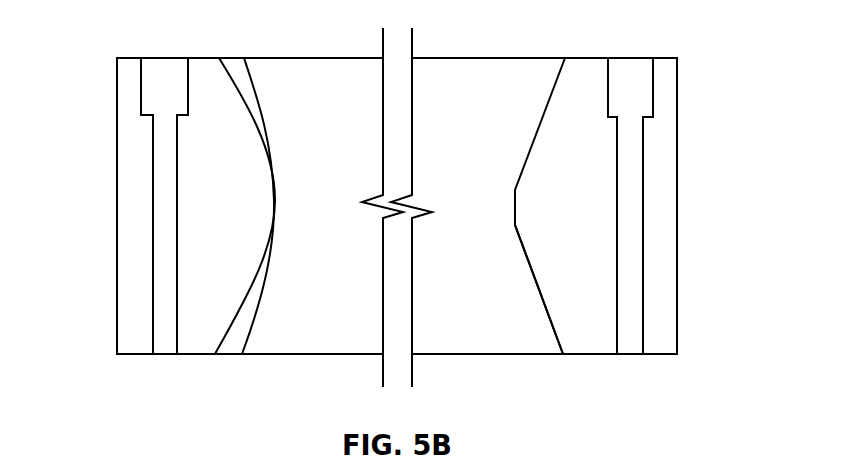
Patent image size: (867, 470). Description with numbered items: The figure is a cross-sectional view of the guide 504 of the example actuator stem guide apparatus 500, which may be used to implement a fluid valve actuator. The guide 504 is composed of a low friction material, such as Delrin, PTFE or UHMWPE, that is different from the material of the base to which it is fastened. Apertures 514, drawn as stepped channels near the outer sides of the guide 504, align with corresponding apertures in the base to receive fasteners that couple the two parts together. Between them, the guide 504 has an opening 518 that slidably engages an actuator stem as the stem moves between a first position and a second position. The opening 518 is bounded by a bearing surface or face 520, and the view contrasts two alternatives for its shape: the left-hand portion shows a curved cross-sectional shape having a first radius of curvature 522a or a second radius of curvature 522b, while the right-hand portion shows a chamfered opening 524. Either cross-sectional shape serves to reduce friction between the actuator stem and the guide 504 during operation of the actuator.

The actuator stem guide apparatus 500 is at (704, 52).
The guide 504 is at (677, 247).
The apertures 514 is at (165, 180).
The opening 518 is at (533, 58).
The bearing surface or face 520 is at (264, 92).
The first radius of curvature 522a is at (263, 303).
The second radius of curvature 522b is at (225, 345).
The chamfered opening 524 is at (538, 295).